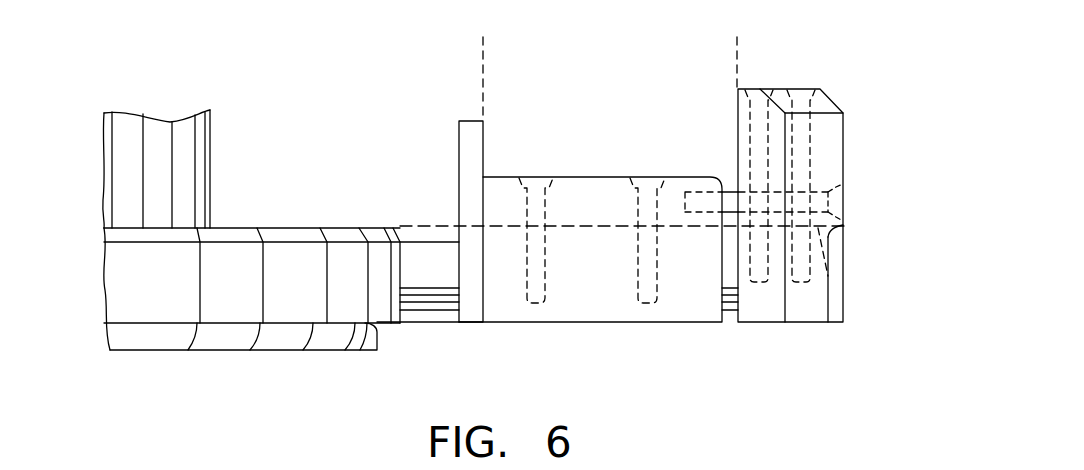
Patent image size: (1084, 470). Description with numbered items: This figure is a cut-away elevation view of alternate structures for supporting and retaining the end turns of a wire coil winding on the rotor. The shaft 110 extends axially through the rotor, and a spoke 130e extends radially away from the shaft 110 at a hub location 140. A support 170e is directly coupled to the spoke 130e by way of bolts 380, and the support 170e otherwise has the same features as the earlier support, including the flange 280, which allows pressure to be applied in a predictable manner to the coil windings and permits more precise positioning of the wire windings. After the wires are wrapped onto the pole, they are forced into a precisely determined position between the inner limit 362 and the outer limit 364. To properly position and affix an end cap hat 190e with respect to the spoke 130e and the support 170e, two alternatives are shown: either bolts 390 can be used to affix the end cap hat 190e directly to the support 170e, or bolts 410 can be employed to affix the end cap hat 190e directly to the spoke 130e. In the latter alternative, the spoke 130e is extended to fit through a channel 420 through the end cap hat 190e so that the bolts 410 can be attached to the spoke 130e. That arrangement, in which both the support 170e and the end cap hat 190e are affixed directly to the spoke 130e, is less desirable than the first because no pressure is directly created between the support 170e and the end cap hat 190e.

The shaft 110 is at (212, 138).
The hub location 140 is at (270, 228).
The spoke 130e is at (434, 306).
The flange 280 is at (466, 121).
The inner limit 362 is at (485, 58).
The outer limit 364 is at (735, 43).
The support 170e is at (574, 178).
The bolts 380 is at (526, 178).
The end cap hat 190e is at (834, 106).
The bolts 410 is at (797, 87).
The bolts 390 is at (850, 198).
The channel 420 is at (828, 276).